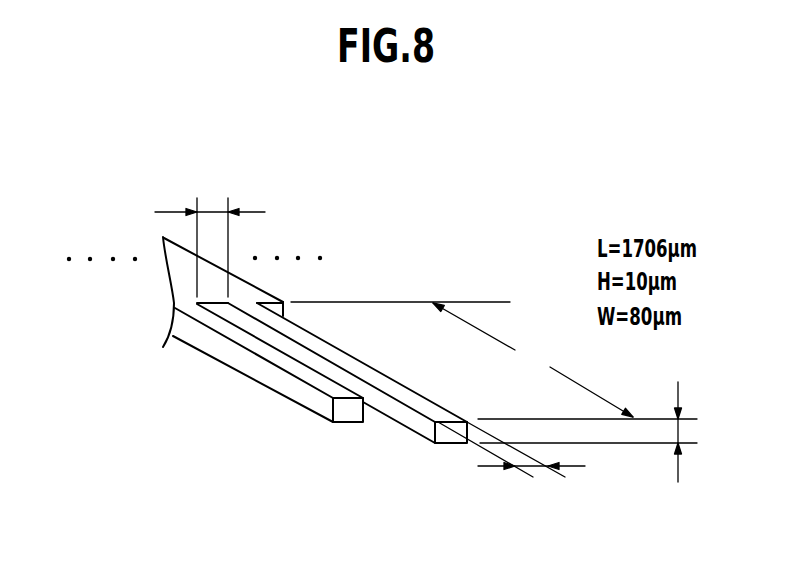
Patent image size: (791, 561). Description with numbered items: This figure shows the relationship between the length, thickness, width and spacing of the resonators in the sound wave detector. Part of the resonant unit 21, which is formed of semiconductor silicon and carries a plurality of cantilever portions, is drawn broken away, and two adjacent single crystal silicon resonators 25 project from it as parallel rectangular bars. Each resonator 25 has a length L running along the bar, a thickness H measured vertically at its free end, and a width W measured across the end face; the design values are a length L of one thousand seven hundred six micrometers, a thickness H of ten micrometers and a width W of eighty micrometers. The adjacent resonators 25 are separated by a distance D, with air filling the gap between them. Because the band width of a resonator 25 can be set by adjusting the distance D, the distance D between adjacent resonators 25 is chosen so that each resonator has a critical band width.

The resonant unit 21 is at (237, 274).
The resonator 25 is at (319, 343).
The distance D is at (210, 233).
The length L is at (462, 359).
The thickness H is at (601, 432).
The width W is at (511, 462).